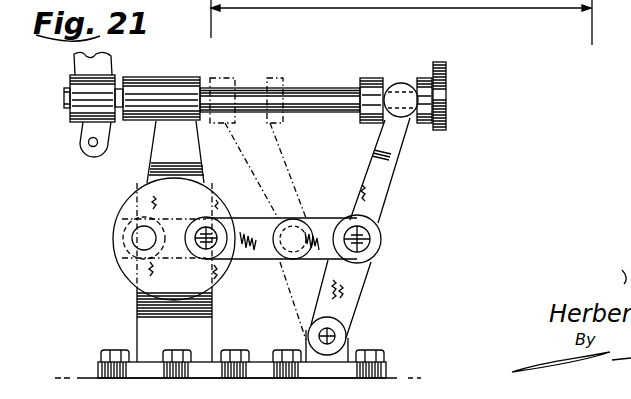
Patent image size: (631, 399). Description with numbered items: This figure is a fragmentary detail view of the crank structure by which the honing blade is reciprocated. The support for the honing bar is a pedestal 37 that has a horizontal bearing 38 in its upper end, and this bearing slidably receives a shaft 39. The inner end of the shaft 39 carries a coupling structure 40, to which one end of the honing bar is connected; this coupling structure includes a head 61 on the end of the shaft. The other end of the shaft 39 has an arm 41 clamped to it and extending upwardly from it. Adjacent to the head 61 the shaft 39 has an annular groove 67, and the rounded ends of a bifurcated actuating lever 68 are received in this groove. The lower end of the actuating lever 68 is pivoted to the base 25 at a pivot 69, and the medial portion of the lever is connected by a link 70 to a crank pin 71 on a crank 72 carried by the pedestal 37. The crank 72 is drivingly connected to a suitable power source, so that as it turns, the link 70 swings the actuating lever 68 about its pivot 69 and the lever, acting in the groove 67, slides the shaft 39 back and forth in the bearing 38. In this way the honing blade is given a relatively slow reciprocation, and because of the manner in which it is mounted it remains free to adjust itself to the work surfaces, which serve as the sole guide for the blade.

The base 25 is at (396, 376).
The pedestal 37 is at (164, 154).
The horizontal bearing 38 is at (173, 99).
The shaft 39 is at (320, 96).
The coupling structure 40 is at (425, 52).
The arm 41 is at (86, 63).
The head 61 is at (439, 62).
The annular groove 67 is at (377, 80).
The bifurcated actuating lever 68 is at (382, 175).
The pivot 69 is at (336, 331).
The link 70 is at (338, 196).
The crank pin 71 is at (210, 231).
The crank 72 is at (204, 214).